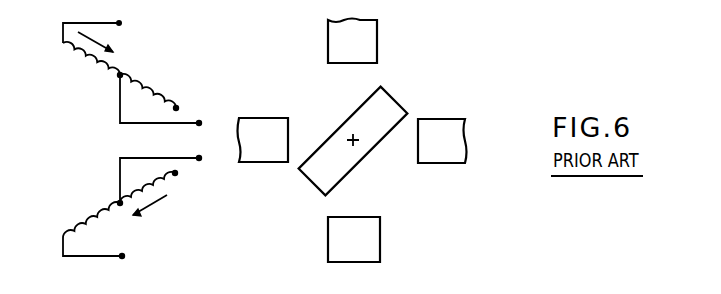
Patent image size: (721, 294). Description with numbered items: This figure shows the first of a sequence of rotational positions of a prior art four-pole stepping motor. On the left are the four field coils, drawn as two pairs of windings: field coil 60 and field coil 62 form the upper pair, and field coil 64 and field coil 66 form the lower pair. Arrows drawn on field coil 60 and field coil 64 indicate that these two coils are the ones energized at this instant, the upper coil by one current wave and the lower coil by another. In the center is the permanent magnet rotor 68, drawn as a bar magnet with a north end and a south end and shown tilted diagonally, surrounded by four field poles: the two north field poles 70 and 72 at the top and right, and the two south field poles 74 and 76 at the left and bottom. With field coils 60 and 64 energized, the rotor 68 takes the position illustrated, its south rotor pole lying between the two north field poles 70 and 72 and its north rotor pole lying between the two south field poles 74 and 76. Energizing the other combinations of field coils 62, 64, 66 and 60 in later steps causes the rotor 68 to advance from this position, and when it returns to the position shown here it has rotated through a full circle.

The field coil 60 is at (93, 57).
The field coil 62 is at (153, 96).
The field coil 64 is at (155, 182).
The field coil 66 is at (99, 212).
The permanent magnet rotor 68 is at (349, 118).
The north field pole 70 is at (328, 40).
The north field pole 72 is at (442, 119).
The south field pole 74 is at (255, 118).
The south field pole 76 is at (328, 237).